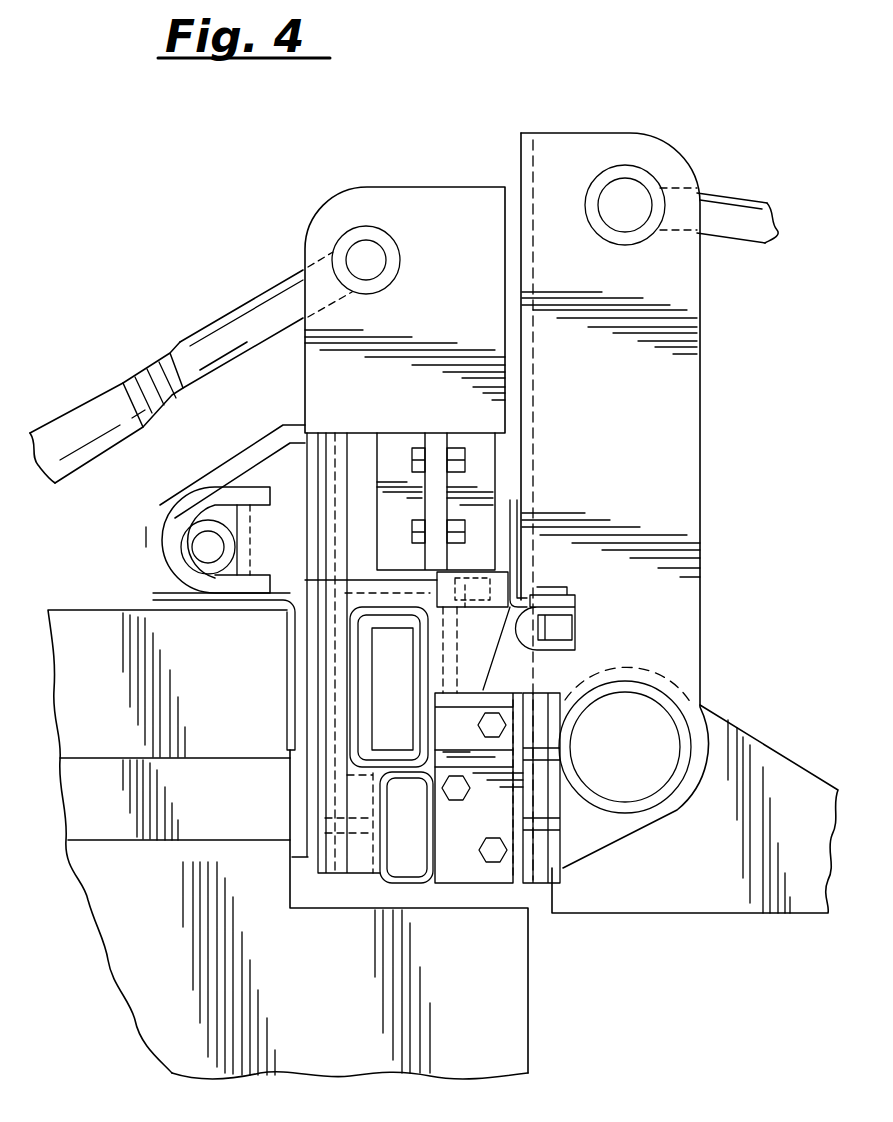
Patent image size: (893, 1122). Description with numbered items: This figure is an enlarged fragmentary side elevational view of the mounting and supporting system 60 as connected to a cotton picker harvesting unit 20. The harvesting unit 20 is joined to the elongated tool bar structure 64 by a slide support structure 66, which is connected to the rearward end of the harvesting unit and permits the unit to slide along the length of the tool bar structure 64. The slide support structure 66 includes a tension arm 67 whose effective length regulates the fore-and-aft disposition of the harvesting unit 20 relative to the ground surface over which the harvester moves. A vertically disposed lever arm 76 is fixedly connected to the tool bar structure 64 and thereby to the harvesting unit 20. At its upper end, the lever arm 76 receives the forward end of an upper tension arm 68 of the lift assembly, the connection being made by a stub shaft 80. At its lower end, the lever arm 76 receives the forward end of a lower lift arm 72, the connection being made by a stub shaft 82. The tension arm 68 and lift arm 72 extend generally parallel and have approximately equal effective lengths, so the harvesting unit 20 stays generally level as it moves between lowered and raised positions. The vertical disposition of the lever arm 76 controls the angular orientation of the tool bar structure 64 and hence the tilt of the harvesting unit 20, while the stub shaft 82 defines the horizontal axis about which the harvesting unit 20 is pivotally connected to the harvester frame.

The cotton picker harvesting unit 20 is at (140, 901).
The mounting and supporting system 60 is at (498, 131).
The tool bar structure 64 is at (410, 884).
The slide support structure 66 is at (384, 187).
The tension arm 67 is at (205, 330).
The upper tension arm 68 is at (722, 208).
The lower lift arm 72 is at (658, 896).
The lever arm 76 is at (672, 280).
The stub shaft 80 is at (647, 180).
The stub shaft 82 is at (683, 724).